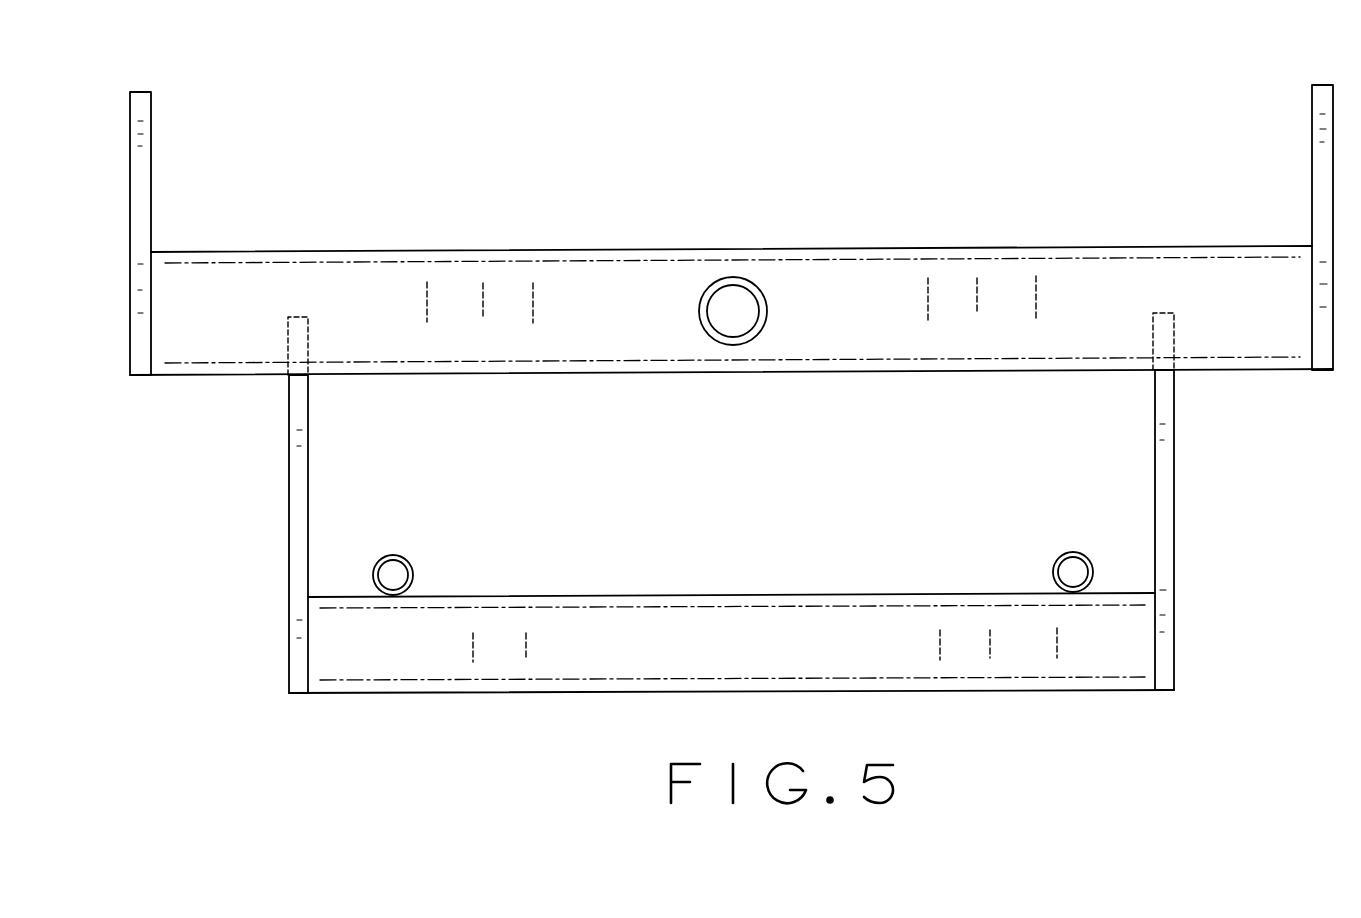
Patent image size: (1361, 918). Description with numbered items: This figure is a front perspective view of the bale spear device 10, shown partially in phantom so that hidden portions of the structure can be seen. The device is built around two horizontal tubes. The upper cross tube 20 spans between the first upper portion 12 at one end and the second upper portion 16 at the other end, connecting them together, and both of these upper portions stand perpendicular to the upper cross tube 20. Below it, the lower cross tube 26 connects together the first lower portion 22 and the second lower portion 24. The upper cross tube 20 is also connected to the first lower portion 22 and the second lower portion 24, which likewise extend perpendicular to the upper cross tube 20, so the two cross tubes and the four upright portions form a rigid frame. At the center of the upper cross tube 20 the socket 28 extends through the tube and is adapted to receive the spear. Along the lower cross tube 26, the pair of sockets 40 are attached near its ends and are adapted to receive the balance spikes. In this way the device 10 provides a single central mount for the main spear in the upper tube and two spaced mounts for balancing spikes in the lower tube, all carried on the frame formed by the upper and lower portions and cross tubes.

The bale spear device 10 is at (553, 196).
The first upper portion 12 is at (1311, 172).
The second upper portion 16 is at (152, 178).
The upper cross tube 20 is at (841, 278).
The first lower portion 22 is at (1174, 488).
The second lower portion 24 is at (289, 494).
The lower cross tube 26 is at (731, 636).
The socket 28 is at (729, 277).
The pair of sockets 40 is at (396, 555).